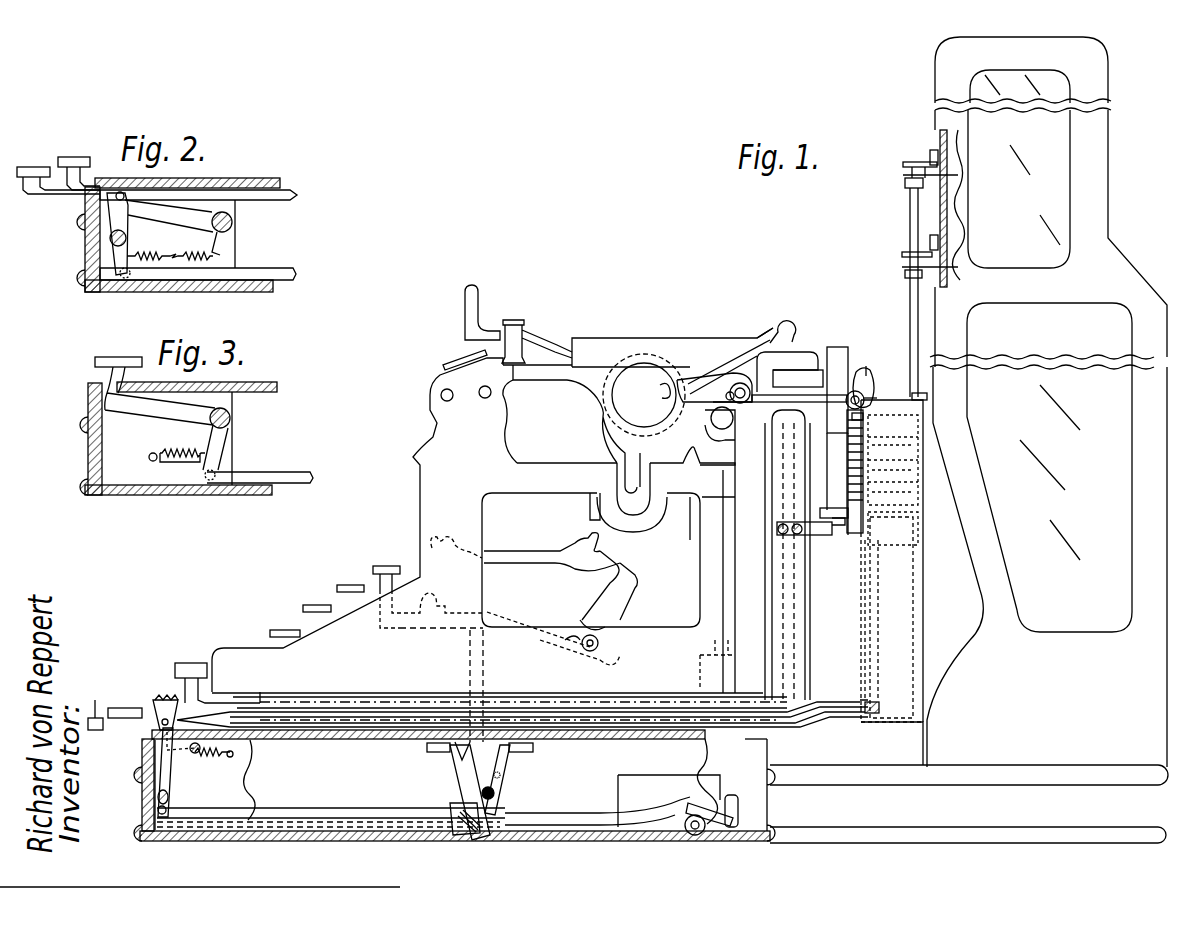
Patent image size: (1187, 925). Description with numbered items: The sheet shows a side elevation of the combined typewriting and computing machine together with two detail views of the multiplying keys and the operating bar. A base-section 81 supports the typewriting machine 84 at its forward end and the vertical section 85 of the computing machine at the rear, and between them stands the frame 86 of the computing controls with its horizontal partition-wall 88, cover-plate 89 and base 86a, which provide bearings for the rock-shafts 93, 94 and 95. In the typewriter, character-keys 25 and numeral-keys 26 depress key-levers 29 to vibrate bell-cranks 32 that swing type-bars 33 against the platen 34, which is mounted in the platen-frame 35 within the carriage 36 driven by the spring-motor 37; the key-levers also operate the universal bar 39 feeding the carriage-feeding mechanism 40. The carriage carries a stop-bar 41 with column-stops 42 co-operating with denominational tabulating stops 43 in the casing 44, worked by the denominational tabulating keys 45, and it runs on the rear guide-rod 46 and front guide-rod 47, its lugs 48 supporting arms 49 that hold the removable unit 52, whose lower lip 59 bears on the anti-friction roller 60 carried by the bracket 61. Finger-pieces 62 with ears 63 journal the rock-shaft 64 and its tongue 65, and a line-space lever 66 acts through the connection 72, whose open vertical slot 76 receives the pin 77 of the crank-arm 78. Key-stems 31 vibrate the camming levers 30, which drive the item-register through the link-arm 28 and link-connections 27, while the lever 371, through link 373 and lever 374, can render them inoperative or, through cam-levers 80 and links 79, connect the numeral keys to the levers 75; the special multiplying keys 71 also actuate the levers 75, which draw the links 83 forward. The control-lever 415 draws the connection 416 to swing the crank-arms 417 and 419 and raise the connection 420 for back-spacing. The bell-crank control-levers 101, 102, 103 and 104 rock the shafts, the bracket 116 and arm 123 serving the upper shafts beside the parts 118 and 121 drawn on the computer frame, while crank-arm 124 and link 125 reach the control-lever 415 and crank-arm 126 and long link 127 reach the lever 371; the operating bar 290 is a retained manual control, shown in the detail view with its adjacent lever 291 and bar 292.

In FIG. 1, the character-keys 25 is at (290, 630).
In FIG. 1, the numeral-keys 26 is at (385, 567).
In FIG. 1, the link-connections 27 is at (533, 748).
In FIG. 1, the link-arm 28 is at (510, 762).
In FIG. 1, the key-levers 29 is at (510, 625).
In FIG. 1, the camming levers 30 is at (495, 797).
In FIG. 1, the key-stems 31 is at (485, 660).
In FIG. 1, the bell-cranks 32 is at (610, 590).
In FIG. 1, the type-bars 33 is at (523, 558).
In FIG. 1, the platen 34 is at (603, 404).
In FIG. 1, the platen-frame 35 is at (672, 347).
In FIG. 1, the carriage 36 is at (543, 380).
In FIG. 1, the spring-motor 37 is at (500, 778).
In FIG. 1, the universal bar 39 is at (588, 510).
In FIG. 1, the carriage-feeding mechanism 40 is at (697, 528).
In FIG. 1, the stop-bar 41 is at (786, 393).
In FIG. 1, the column-stops 42 is at (810, 387).
In FIG. 1, the denominational tabulating stops 43 is at (793, 580).
In FIG. 1, the casing 44 is at (803, 618).
In FIG. 1, the denominational tabulating keys 45 is at (192, 663).
In FIG. 1, the rear guide-rod 46 is at (718, 425).
In FIG. 1, the front guide-rod 47 is at (486, 399).
In FIG. 1, the lugs 48 is at (730, 425).
In FIG. 1, the arms 49 is at (735, 402).
In FIG. 1, the unit 52 is at (853, 531).
In FIG. 1, the lower lip 59 is at (838, 526).
In FIG. 1, the anti-friction roller 60 is at (822, 510).
In FIG. 1, the bracket 61 is at (823, 536).
In FIG. 1, the finger-piece 62 is at (837, 428).
In FIG. 1, the ear 63 is at (862, 408).
In FIG. 1, the rock-shaft 64 is at (850, 396).
In FIG. 1, the longitudinal tongue 65 is at (852, 416).
In FIG. 1, the line-space lever 66 is at (481, 302).
In FIG. 2, the special multiplying keys 71 is at (60, 160).
In FIG. 1, the special multiplying keys 71 is at (96, 710).
In FIG. 1, the connection 72 is at (872, 378).
In FIG. 2, the levers 75 is at (132, 236).
In FIG. 1, the open vertical slot 76 is at (862, 370).
In FIG. 1, the pin 77 is at (868, 368).
In FIG. 1, the crank-arm 78 is at (875, 388).
In FIG. 2, the links 79 is at (265, 197).
In FIG. 1, the links 79 is at (428, 748).
In FIG. 1, the cam-levers 80 is at (453, 758).
In FIG. 2, the base-section 81 is at (90, 255).
In FIG. 3, the base-section 81 is at (92, 462).
In FIG. 1, the base-section 81 is at (140, 800).
In FIG. 2, the link 83 is at (266, 270).
In FIG. 1, the typewriting machine 84 is at (409, 532).
In FIG. 1, the vertical section 85 is at (1047, 402).
In FIG. 1, the frame 86 is at (891, 617).
In FIG. 1, the base 86a is at (893, 724).
In FIG. 1, the horizontal partition-wall 88 is at (893, 528).
In FIG. 1, the cover-plate 89 is at (925, 395).
In FIG. 1, the rock-shaft 93 is at (910, 218).
In FIG. 1, the rock-shaft 94 is at (863, 652).
In FIG. 1, the rock-shaft 95 is at (878, 630).
In FIG. 1, the control-lever 101 is at (893, 455).
In FIG. 1, the control-lever 102 is at (893, 460).
In FIG. 1, the control-lever 103 is at (893, 479).
In FIG. 1, the control-lever 104 is at (872, 495).
In FIG. 1, the bracket 116 is at (902, 253).
In FIG. 1, the cap 118 is at (930, 160).
In FIG. 1, the block 121 is at (905, 272).
In FIG. 1, the arm 123 is at (905, 181).
In FIG. 1, the crank-arm 124 is at (855, 700).
In FIG. 1, the link 125 is at (340, 708).
In FIG. 1, the crank-arm 126 is at (880, 706).
In FIG. 1, the long link 127 is at (310, 726).
In FIG. 3, the operating bar 290 is at (117, 358).
In FIG. 3, the lever 291 is at (148, 412).
In FIG. 3, the bar 292 is at (268, 473).
In FIG. 1, the lever 371 is at (155, 707).
In FIG. 1, the link 373 is at (345, 816).
In FIG. 1, the lever 374 is at (458, 803).
In FIG. 1, the control-lever 415 is at (178, 700).
In FIG. 1, the connection 416 is at (280, 815).
In FIG. 1, the crank-arm 417 is at (685, 826).
In FIG. 1, the crank-arm 419 is at (705, 812).
In FIG. 1, the connection 420 is at (729, 797).